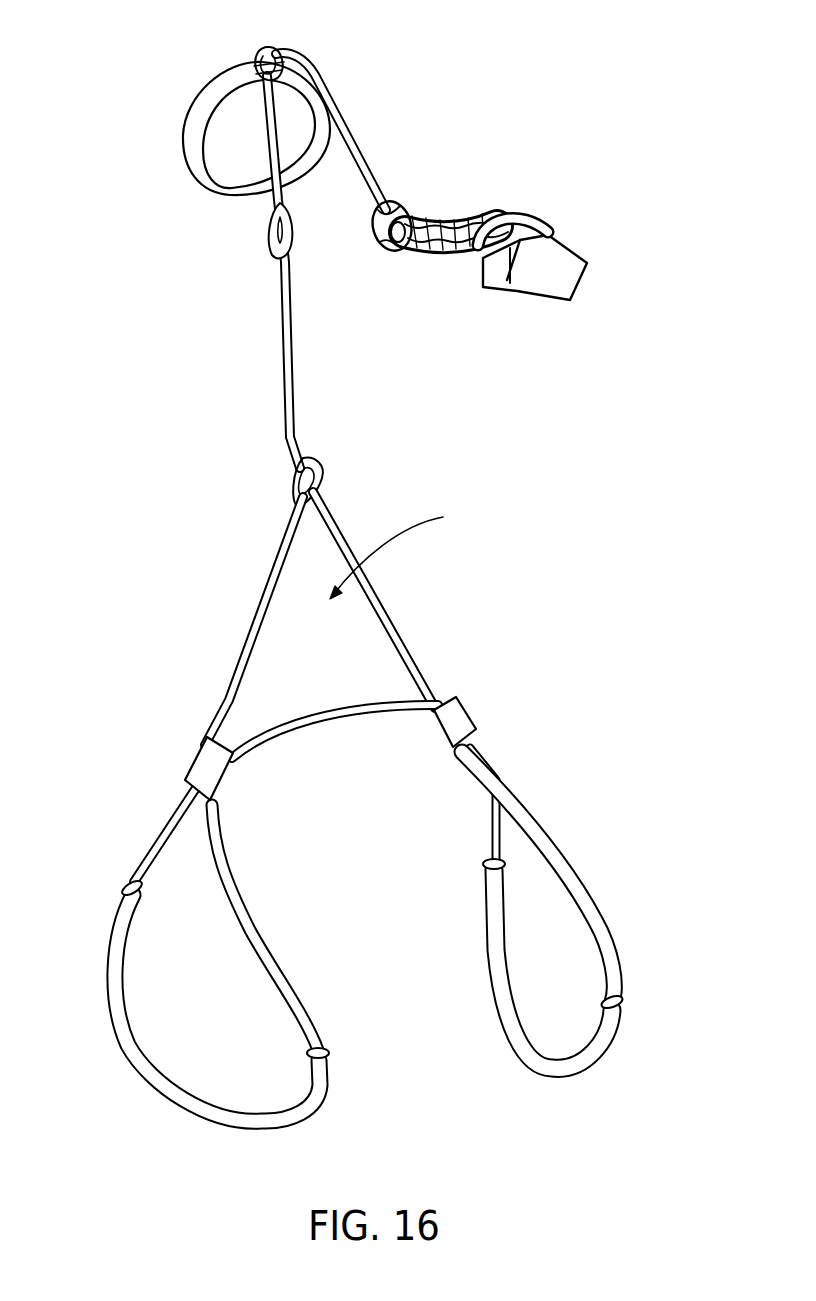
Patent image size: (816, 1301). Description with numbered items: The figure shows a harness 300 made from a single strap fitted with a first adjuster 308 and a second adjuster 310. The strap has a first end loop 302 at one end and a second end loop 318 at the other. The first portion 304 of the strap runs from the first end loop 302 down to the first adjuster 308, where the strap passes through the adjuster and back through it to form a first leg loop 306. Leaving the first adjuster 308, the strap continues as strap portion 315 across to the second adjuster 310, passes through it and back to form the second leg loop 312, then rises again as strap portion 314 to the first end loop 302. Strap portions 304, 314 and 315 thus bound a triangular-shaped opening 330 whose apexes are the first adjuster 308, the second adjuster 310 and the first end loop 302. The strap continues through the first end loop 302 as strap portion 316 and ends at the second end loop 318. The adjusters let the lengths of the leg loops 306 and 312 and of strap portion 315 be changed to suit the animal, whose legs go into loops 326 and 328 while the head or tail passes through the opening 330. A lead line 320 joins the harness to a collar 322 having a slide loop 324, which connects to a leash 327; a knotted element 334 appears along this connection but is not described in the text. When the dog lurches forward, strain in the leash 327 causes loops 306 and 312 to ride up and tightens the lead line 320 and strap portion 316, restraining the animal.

The harness 300 is at (732, 491).
The first end loop 302 is at (330, 470).
The first portion of the strap 304 is at (253, 625).
The first leg loop 306 is at (160, 836).
The first adjuster 308 is at (193, 757).
The second adjuster 310 is at (475, 713).
The second leg loop 312 is at (540, 811).
The strap portion 314 is at (388, 610).
The strap portion 315 is at (357, 716).
The strap portion 316 is at (298, 375).
The second end loop 318 is at (267, 227).
The lead line 320 is at (362, 152).
The collar 322 is at (203, 106).
The slide loop 324 is at (275, 50).
The loop 326 is at (213, 1040).
The leash 327 is at (537, 280).
The loop 328 is at (553, 1012).
The triangular-shaped opening 330 is at (406, 552).
The knot 334 is at (411, 257).